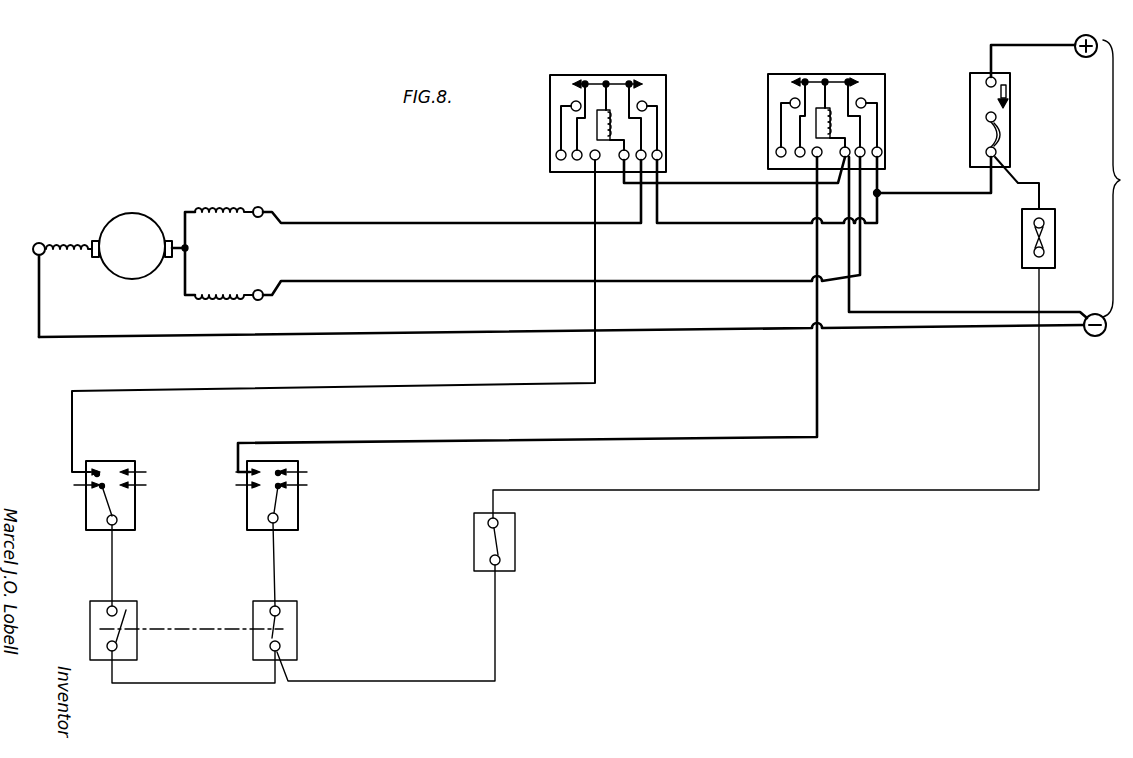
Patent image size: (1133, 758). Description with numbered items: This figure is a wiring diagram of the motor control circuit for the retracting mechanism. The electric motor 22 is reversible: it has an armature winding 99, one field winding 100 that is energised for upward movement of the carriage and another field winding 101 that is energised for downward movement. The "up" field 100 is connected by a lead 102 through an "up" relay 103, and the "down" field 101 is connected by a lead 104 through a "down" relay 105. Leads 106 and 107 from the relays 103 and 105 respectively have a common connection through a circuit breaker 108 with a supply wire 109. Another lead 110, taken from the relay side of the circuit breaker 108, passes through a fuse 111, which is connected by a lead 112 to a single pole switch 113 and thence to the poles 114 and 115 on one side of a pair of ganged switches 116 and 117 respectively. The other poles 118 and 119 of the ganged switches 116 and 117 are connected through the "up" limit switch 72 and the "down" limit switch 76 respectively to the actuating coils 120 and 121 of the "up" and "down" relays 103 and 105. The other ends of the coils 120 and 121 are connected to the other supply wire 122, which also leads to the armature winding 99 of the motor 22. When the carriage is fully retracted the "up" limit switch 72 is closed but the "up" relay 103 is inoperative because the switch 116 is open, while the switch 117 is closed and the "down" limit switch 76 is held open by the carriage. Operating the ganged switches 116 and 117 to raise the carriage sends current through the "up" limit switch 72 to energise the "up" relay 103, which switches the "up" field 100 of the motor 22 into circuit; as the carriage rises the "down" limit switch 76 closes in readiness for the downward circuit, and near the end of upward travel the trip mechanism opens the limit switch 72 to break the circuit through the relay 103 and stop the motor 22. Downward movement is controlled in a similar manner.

The electric motor 22 is at (118, 224).
The "up" limit switch 72 is at (132, 515).
The "down" limit switch 76 is at (268, 517).
The armature winding 99 is at (62, 238).
The "up" field winding 100 is at (229, 201).
The "down" field winding 101 is at (218, 294).
The lead 102 is at (467, 217).
The "up" relay 103 is at (589, 114).
The lead 104 is at (455, 275).
The "down" relay 105 is at (802, 110).
The lead 106 is at (724, 223).
The lead 107 is at (880, 180).
The circuit breaker 108 is at (988, 128).
The supply wire 109 is at (1034, 43).
The lead 110 is at (1028, 182).
The fuse 111 is at (1022, 237).
The lead 112 is at (882, 487).
The single pole switch 113 is at (474, 545).
The pole 114 is at (107, 648).
The pole 115 is at (281, 646).
The ganged switch 116 is at (115, 625).
The ganged switch 117 is at (282, 618).
The pole 118 is at (114, 609).
The pole 119 is at (279, 607).
The actuating coil 120 is at (604, 126).
The actuating coil 121 is at (822, 125).
The supply wire 122 is at (1048, 326).